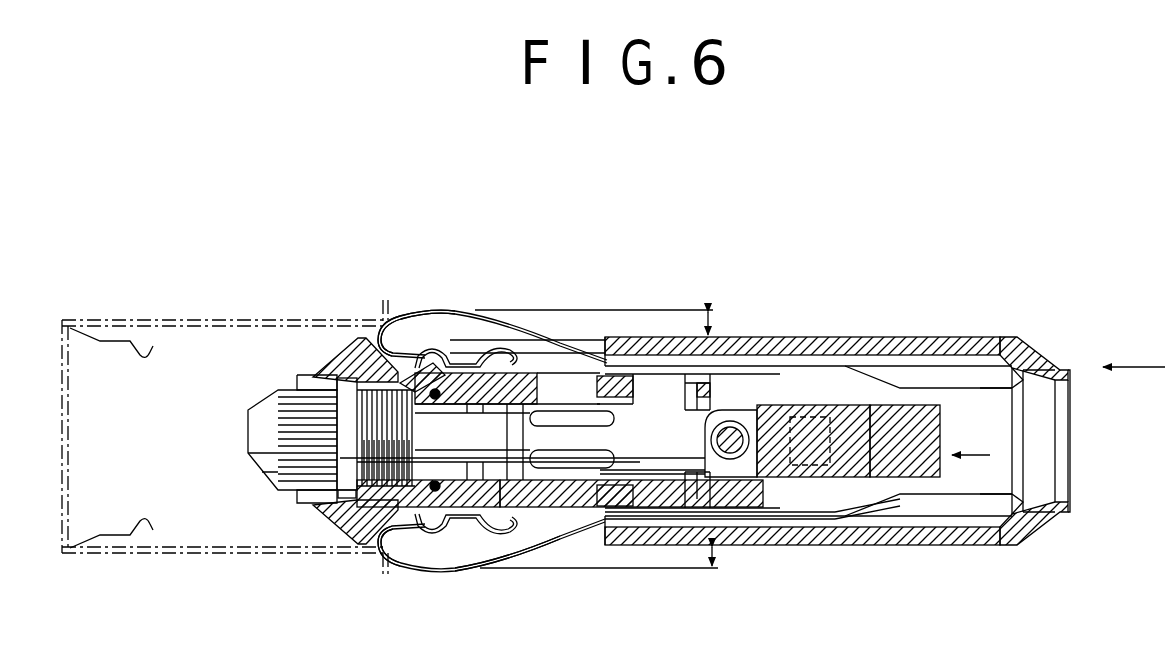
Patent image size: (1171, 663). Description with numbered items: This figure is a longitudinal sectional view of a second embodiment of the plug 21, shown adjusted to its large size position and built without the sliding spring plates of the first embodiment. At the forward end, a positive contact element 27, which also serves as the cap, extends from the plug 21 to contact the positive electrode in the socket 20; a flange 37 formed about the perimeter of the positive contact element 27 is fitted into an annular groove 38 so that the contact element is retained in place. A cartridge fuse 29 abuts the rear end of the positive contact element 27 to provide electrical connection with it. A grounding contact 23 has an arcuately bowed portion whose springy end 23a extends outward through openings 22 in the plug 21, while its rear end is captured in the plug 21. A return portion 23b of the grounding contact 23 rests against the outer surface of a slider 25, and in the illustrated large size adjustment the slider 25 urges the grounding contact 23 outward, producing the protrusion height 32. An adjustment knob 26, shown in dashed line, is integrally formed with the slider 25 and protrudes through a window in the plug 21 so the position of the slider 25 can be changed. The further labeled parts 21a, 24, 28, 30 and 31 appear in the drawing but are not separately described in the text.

The socket 20 is at (188, 560).
The plug 21 is at (829, 311).
The sleeve end portion 21a is at (913, 465).
The openings 22 is at (455, 345).
The grounding contact 23 is at (500, 327).
The springy end 23a is at (387, 325).
The return portion 23b is at (423, 328).
The inner tube 24 is at (620, 372).
The slider 25 is at (530, 342).
The adjustment knob 26 is at (830, 480).
The positive contact element 27 is at (260, 452).
The lower body member 28 is at (652, 508).
The cartridge fuse 29 is at (430, 423).
The lower spring arm 30 is at (470, 556).
The spring strip 31 is at (508, 566).
The protrusion height 32 is at (712, 320).
The flange 37 is at (337, 507).
The annular groove 38 is at (343, 500).